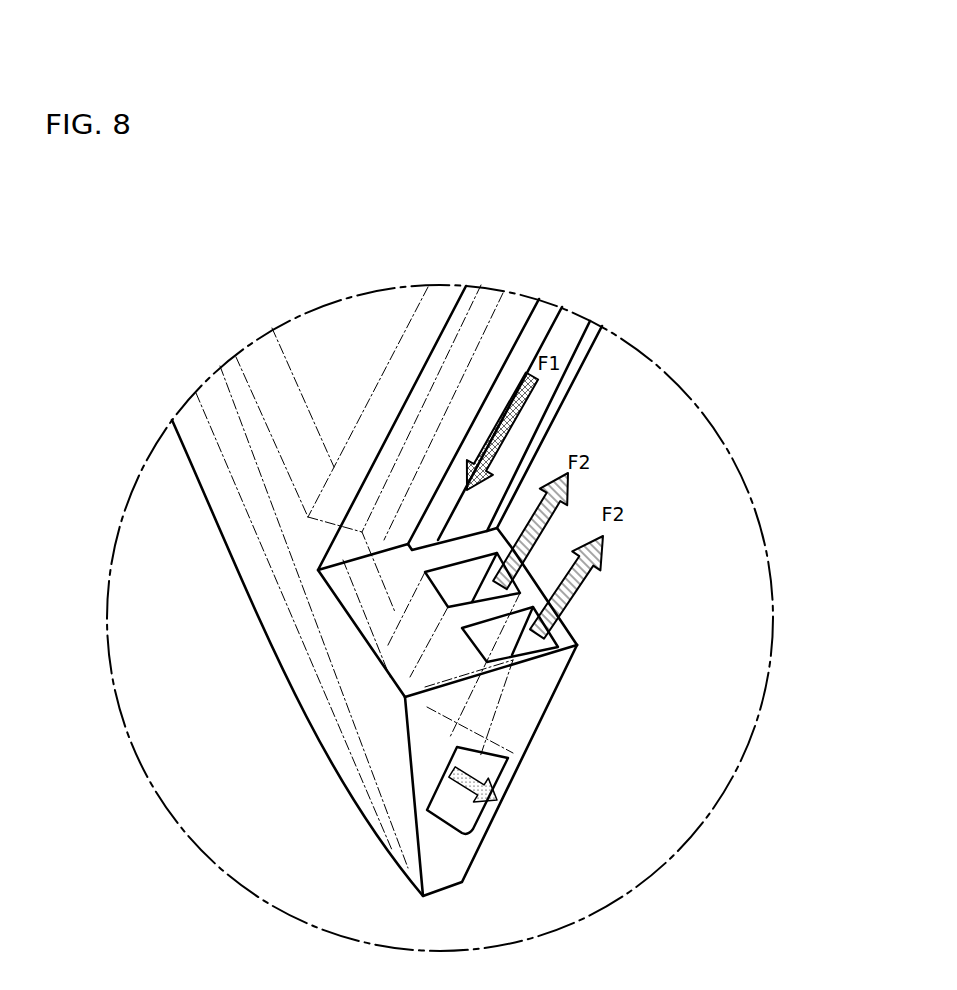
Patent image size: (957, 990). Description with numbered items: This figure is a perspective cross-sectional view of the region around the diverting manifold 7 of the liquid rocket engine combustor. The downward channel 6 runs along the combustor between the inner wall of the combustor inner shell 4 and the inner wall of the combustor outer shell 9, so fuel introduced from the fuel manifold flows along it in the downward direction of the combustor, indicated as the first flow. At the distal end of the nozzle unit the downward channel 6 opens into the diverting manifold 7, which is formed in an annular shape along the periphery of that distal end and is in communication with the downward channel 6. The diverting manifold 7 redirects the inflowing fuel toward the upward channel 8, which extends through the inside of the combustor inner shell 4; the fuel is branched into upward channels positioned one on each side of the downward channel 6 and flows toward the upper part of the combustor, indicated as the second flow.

The combustor inner shell 4 is at (587, 361).
The downward channel 6 is at (570, 335).
The diverting manifold 7 is at (492, 768).
The upward channel 8 is at (493, 647).
The combustor outer shell 9 is at (313, 363).